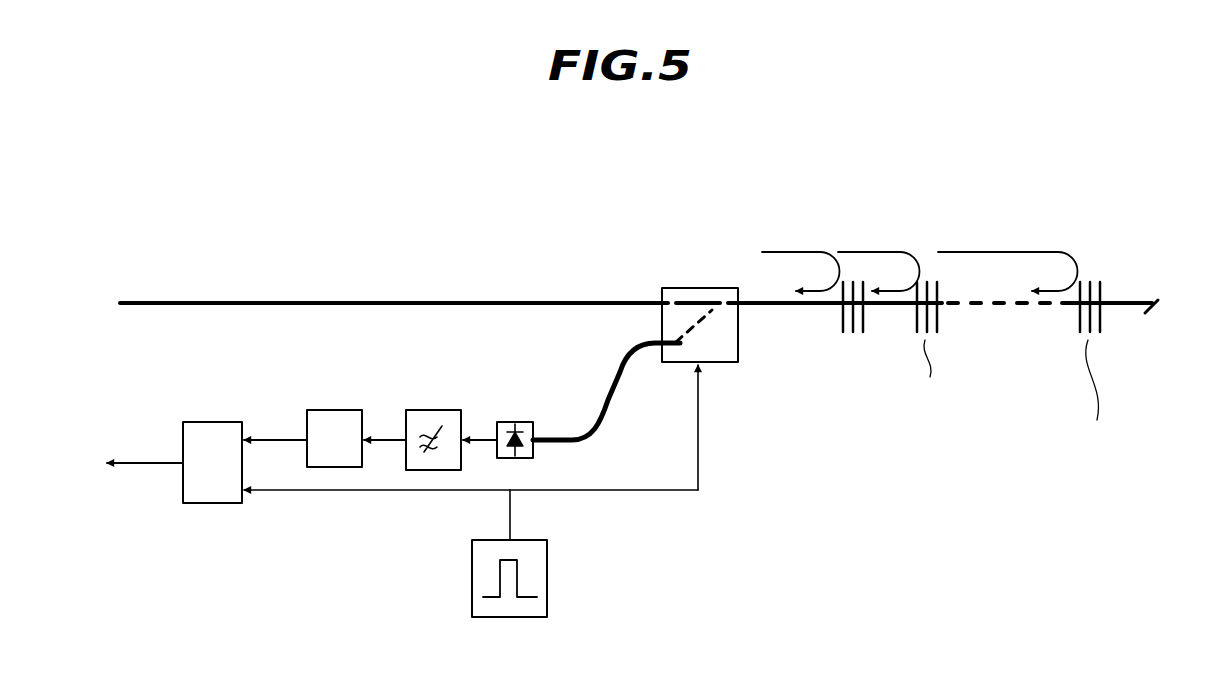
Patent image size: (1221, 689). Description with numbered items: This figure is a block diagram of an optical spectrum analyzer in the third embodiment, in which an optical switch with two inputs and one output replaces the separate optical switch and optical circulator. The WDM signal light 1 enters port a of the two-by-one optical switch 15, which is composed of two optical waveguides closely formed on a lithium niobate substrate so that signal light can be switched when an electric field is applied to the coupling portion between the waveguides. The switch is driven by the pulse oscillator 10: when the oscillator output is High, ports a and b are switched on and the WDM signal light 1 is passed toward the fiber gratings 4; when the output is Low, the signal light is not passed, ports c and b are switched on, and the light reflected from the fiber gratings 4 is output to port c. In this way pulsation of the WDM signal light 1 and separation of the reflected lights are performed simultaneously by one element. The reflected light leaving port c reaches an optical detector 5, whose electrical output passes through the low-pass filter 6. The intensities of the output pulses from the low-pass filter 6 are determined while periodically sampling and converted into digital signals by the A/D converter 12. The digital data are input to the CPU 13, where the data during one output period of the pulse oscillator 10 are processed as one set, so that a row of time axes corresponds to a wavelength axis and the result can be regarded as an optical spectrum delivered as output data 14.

The WDM signal light 1 is at (170, 285).
The 2×1 optical switch 15 is at (688, 287).
The fiber gratings 4 is at (1092, 282).
The CPU 13 is at (215, 505).
The output data 14 is at (140, 463).
The A/D converter 12 is at (307, 432).
The low-pass filter 6 is at (420, 472).
The optical detector 5 is at (510, 422).
The pulse oscillator 10 is at (547, 577).